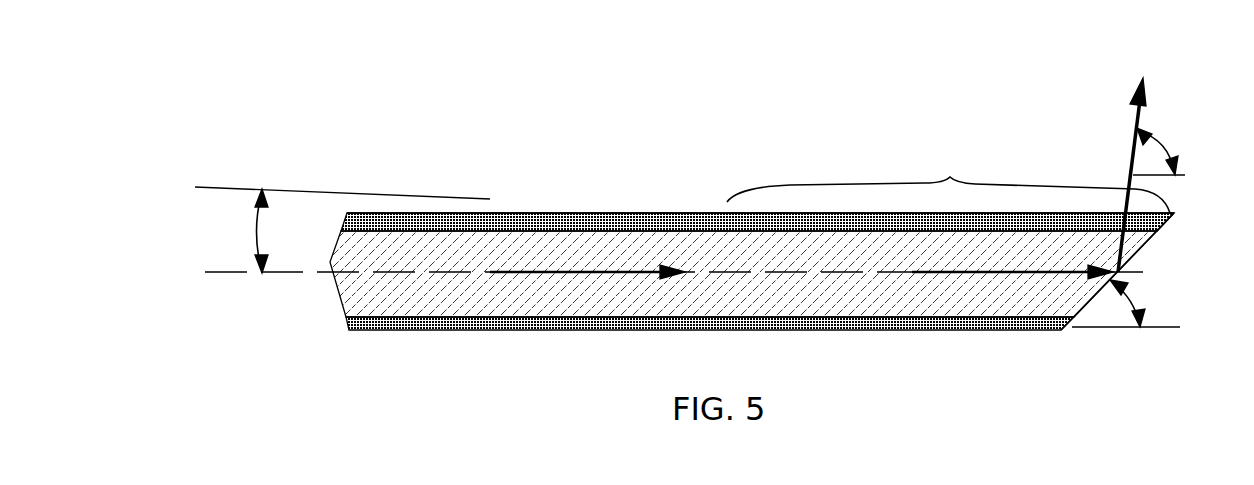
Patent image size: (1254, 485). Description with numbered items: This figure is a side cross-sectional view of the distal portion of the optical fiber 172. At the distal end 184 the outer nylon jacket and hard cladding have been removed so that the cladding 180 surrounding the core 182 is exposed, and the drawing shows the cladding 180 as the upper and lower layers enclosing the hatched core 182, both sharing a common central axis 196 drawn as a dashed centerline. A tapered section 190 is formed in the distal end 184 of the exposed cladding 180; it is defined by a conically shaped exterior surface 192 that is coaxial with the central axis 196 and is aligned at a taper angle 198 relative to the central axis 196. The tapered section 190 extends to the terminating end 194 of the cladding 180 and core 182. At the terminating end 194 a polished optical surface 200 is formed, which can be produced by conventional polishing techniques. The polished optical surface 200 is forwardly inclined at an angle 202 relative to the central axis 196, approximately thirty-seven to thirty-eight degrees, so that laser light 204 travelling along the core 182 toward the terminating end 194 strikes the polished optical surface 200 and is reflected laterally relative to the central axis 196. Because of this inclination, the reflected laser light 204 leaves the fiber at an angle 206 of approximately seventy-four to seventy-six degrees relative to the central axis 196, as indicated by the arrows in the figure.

The optical fiber 172 is at (285, 112).
The cladding 180 is at (577, 213).
The core 182 is at (868, 300).
The distal end 184 is at (655, 213).
The tapered section 190 is at (948, 182).
The conically shaped exterior surface 192 is at (1032, 330).
The terminating end 194 is at (1170, 227).
The central axis 196 is at (222, 273).
The taper angle 198 is at (252, 230).
The polished optical surface 200 is at (1147, 240).
The angle 202 is at (1128, 292).
The laser light 204 is at (527, 272).
The angle 206 is at (1163, 140).